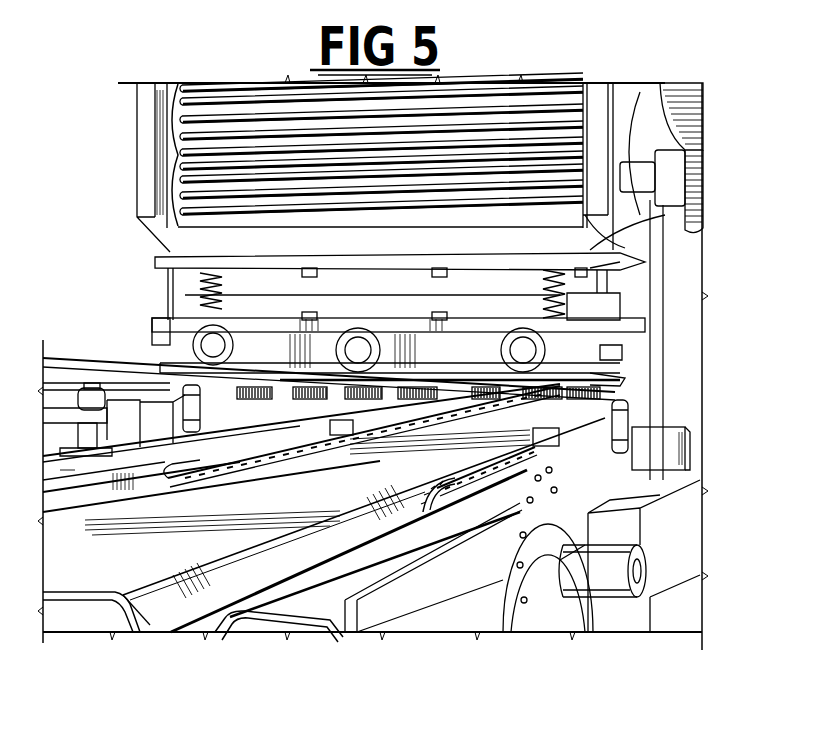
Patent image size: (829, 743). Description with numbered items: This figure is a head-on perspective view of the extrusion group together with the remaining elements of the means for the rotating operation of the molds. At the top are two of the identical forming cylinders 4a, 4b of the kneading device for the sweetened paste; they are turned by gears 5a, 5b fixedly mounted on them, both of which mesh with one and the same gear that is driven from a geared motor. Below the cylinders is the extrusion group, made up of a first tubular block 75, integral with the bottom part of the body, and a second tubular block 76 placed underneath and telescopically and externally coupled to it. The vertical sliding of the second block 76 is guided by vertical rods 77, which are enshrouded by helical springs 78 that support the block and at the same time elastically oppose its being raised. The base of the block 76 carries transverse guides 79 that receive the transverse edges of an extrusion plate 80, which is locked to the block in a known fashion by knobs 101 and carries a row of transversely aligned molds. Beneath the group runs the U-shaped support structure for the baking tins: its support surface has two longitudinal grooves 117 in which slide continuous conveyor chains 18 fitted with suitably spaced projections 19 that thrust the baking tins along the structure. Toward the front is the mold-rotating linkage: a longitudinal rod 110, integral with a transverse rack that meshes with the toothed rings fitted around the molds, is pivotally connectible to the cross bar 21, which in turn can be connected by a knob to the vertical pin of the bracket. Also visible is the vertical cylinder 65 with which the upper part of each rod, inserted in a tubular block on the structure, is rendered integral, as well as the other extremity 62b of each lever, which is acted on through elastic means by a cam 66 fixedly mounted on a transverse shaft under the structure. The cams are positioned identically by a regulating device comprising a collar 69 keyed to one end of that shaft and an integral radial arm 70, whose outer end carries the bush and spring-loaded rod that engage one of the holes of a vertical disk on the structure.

The forming cylinder 4a is at (180, 92).
The forming cylinder 4b is at (188, 170).
The gear 5a is at (658, 100).
The gear 5b is at (688, 146).
The helical springs 78 is at (190, 272).
The knobs 101 is at (212, 345).
The vertical cylinder 65 is at (168, 372).
The cross bar 21 is at (86, 360).
The vertical rods 77 is at (588, 250).
The first tubular block 75 is at (595, 268).
The second tubular block 76 is at (606, 308).
The transverse guides 79 is at (608, 355).
The extrusion plate 80 is at (613, 378).
The continuous conveyor chains 18 is at (210, 474).
The longitudinal rod 110 is at (280, 399).
The projections 19 is at (345, 436).
The longitudinal grooves 117 is at (70, 493).
The cam 66 is at (540, 505).
The collar 69 is at (557, 580).
The other extremity of the lever 62b is at (555, 617).
The radial arm 70 is at (618, 613).